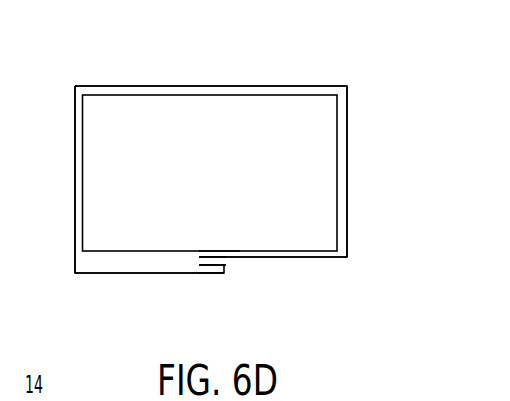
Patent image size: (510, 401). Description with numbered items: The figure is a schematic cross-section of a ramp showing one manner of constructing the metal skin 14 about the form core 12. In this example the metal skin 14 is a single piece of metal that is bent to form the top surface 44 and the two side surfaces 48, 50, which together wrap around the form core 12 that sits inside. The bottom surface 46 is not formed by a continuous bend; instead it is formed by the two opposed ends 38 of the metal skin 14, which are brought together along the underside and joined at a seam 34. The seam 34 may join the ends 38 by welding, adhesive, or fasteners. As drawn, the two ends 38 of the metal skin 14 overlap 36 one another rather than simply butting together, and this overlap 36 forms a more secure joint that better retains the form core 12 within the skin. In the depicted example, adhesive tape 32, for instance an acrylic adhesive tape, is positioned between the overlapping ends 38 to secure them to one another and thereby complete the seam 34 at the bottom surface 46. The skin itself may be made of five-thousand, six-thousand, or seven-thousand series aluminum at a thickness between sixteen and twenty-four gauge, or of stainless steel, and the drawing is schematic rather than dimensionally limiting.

The metal skin 14 is at (296, 59).
The form core 12 is at (219, 181).
The top surface 44 is at (183, 86).
The bottom surface 46 is at (143, 274).
The side surface 48 is at (75, 177).
The side surface 50 is at (347, 177).
The adhesive tape 32 is at (222, 264).
The seam 34 is at (203, 298).
The overlap 36 is at (229, 246).
The ends of the metal skin 38 is at (213, 257).